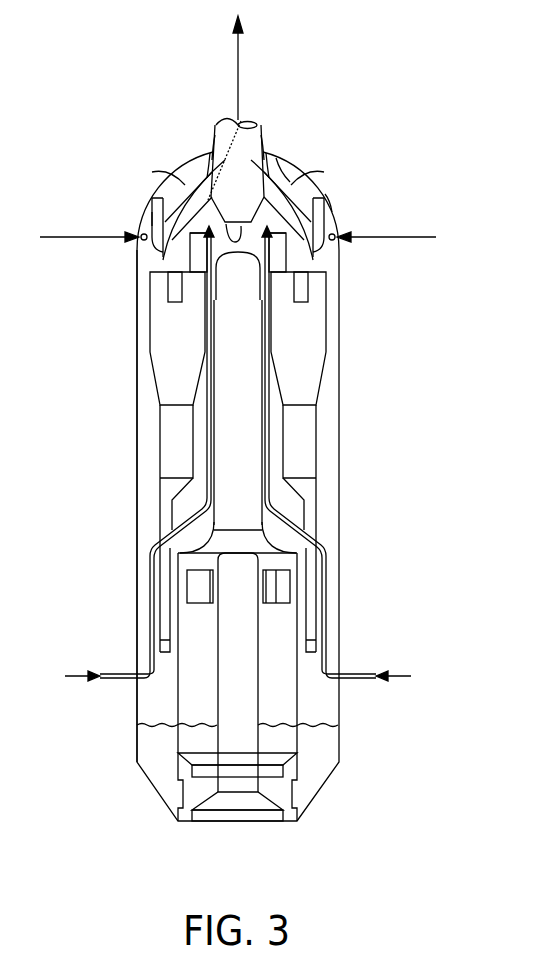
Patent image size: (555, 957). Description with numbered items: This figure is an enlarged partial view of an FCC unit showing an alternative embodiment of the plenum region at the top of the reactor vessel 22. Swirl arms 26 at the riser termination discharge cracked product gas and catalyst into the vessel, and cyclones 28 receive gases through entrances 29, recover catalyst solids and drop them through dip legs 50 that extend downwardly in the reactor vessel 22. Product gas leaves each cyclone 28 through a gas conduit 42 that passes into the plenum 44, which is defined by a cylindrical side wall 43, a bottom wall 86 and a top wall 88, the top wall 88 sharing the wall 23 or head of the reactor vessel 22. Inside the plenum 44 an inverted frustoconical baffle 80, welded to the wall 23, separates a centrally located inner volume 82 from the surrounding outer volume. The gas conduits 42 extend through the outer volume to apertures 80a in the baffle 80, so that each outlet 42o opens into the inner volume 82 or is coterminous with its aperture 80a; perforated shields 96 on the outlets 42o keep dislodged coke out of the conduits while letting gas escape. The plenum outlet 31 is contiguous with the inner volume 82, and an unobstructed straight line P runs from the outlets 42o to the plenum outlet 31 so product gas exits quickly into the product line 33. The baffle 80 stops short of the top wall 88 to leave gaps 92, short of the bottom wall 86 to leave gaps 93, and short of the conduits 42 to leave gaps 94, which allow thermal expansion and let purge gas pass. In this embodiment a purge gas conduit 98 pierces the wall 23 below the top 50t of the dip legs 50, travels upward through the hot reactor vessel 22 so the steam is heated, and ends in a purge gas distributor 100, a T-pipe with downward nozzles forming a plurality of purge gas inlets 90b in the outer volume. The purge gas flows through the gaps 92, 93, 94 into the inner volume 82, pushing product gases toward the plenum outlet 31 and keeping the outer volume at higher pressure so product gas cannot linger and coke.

The reactor vessel 22 is at (342, 612).
The wall 23 is at (134, 364).
The swirl arm 26 is at (267, 603).
The cyclone 28 is at (163, 332).
The entrance 29 is at (173, 282).
The plenum outlet 31 is at (262, 124).
The product line 33 is at (240, 63).
The gas conduit 42 is at (165, 181).
The outlet 42o is at (210, 153).
The side wall 43 is at (152, 218).
The plenum 44 is at (152, 208).
The dip leg 50 is at (163, 600).
The top of the dip legs 50t is at (172, 500).
The baffle 80 is at (290, 182).
The aperture 80a is at (180, 183).
The inner volume 82 is at (237, 211).
The bottom wall 86 is at (148, 245).
The top wall 88 is at (325, 194).
The purge gas inlet 90b is at (217, 225).
The gap 92 is at (205, 175).
The gap 93 is at (244, 241).
The gap 94 is at (137, 225).
The perforated shield 96 is at (215, 135).
The purge gas conduit 98 is at (207, 450).
The purge gas distributor 100 is at (200, 258).
The straight line P is at (216, 126).